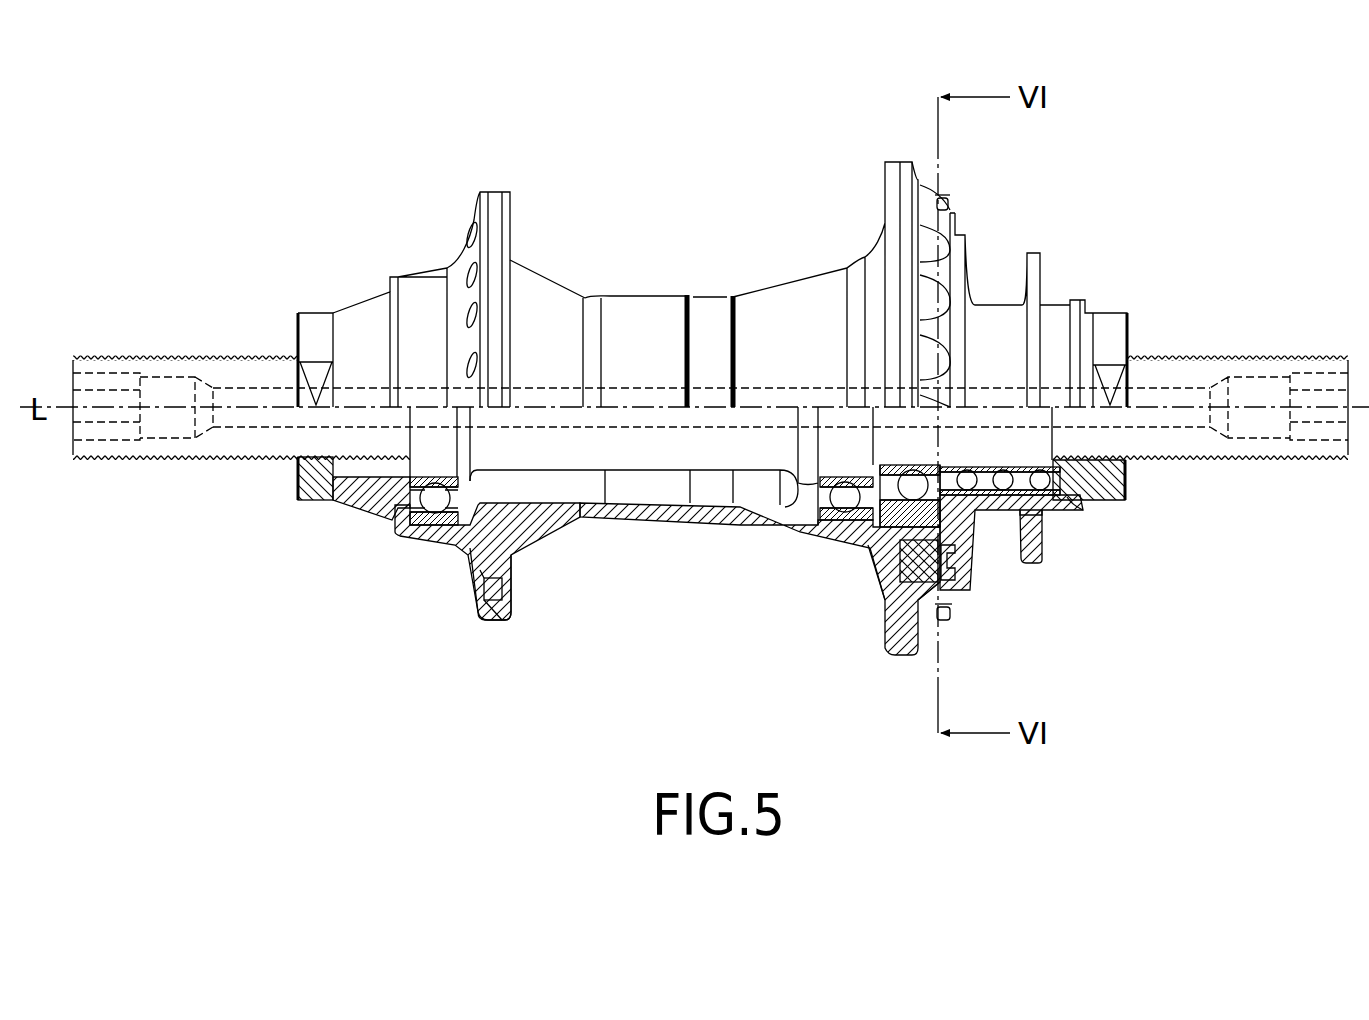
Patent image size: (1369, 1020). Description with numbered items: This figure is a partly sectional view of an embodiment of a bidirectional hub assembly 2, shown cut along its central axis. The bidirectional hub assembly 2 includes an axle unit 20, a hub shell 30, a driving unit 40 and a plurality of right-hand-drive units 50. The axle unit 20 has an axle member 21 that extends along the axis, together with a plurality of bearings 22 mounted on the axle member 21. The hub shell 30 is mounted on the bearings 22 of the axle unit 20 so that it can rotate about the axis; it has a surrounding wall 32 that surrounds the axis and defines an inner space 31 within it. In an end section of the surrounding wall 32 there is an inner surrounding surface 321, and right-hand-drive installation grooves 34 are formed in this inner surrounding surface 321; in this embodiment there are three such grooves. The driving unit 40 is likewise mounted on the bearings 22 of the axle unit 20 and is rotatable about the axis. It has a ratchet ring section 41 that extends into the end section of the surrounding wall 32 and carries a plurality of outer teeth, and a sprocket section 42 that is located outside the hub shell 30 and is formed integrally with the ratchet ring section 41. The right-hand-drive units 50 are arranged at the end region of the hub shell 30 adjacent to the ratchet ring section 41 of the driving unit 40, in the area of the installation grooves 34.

The bidirectional hub assembly 2 is at (684, 272).
The axle unit 20 is at (174, 466).
The axle member 21 is at (525, 465).
The bearings 22 is at (418, 528).
The hub shell 30 is at (620, 522).
The inner space 31 is at (660, 490).
The surrounding wall 32 is at (706, 512).
The inner surrounding surface 321 is at (882, 614).
The right-hand-drive installation grooves 34 is at (878, 588).
The driving unit 40 is at (1032, 570).
The ratchet ring section 41 is at (872, 553).
The sprocket section 42 is at (1042, 550).
The right-hand-drive units 50 is at (916, 590).